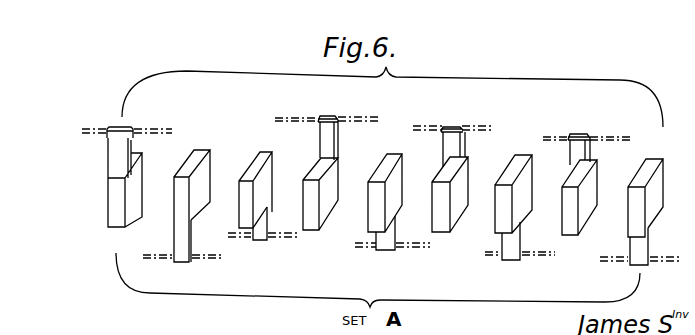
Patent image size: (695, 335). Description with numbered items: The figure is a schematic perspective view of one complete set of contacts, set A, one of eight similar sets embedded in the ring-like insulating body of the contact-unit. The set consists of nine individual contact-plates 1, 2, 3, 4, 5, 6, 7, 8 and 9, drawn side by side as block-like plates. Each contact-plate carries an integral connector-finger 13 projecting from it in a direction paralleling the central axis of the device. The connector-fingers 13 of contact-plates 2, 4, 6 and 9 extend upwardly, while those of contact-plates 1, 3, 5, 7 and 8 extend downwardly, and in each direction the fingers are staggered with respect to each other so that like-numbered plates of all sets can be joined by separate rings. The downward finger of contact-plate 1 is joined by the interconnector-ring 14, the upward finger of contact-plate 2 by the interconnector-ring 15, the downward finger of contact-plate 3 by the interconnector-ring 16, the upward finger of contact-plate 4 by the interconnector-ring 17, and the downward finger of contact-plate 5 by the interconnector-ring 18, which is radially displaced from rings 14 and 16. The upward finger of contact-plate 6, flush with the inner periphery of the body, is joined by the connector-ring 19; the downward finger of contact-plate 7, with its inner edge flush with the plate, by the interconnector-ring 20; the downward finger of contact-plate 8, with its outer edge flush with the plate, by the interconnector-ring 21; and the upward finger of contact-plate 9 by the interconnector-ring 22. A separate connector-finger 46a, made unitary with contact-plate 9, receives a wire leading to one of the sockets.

The contact-plate 1 is at (645, 198).
The contact-plate 2 is at (579, 197).
The contact-plate 3 is at (513, 194).
The contact-plate 4 is at (450, 194).
The contact-plate 5 is at (385, 193).
The contact-plate 6 is at (320, 194).
The contact-plate 7 is at (255, 190).
The contact-plate 8 is at (192, 206).
The contact-plate 9 is at (125, 182).
The connector-finger 13 is at (137, 142).
The interconnector-ring 14 is at (668, 262).
The interconnector-ring 15 is at (617, 137).
The interconnector-ring 16 is at (538, 257).
The interconnector-ring 17 is at (473, 125).
The interconnector-ring 18 is at (411, 249).
The connector-ring 19 is at (359, 117).
The interconnector-ring 20 is at (285, 239).
The interconnector-ring 21 is at (207, 259).
The interconnector-ring 22 is at (155, 129).
The connector-finger 46a is at (112, 159).